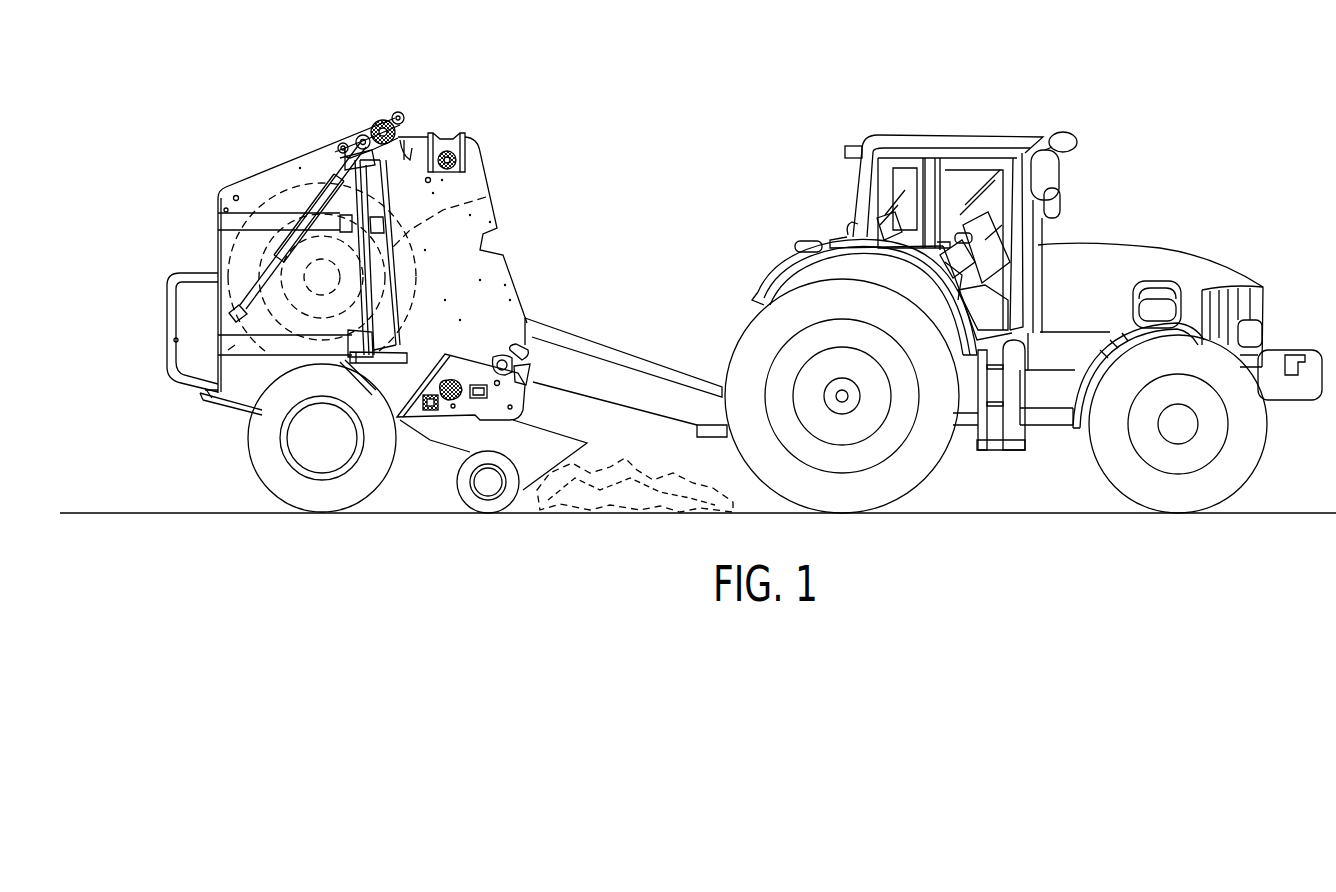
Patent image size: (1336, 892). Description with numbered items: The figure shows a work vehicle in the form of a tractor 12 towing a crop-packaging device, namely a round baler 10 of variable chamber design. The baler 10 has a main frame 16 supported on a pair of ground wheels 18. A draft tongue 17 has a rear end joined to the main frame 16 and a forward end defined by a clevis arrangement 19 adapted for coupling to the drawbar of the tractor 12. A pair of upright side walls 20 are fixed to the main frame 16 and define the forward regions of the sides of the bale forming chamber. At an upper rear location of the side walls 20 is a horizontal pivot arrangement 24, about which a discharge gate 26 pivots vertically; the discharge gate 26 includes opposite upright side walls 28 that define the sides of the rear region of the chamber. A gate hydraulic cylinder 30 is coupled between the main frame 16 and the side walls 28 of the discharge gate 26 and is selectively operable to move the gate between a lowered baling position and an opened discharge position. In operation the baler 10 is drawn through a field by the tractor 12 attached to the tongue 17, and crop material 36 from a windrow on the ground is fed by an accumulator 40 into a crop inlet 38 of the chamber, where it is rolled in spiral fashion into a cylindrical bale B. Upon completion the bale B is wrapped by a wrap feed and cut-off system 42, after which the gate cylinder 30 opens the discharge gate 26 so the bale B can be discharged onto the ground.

The round baler 10 is at (222, 120).
The tractor 12 is at (1170, 253).
The main frame 16 is at (398, 417).
The draft tongue 17 is at (642, 410).
The ground wheels 18 is at (252, 467).
The clevis arrangement 19 is at (713, 437).
The upright side walls 20 is at (478, 160).
The horizontal pivot arrangement 24 is at (367, 136).
The discharge gate 26 is at (218, 221).
The opposite upright side walls 28 is at (245, 192).
The gate hydraulic cylinder 30 is at (313, 198).
The crop material 36 is at (660, 500).
The crop inlet 38 is at (523, 490).
The accumulator 40 is at (447, 447).
The wrap feed and cut-off system 42 is at (187, 319).
The bale B is at (489, 197).